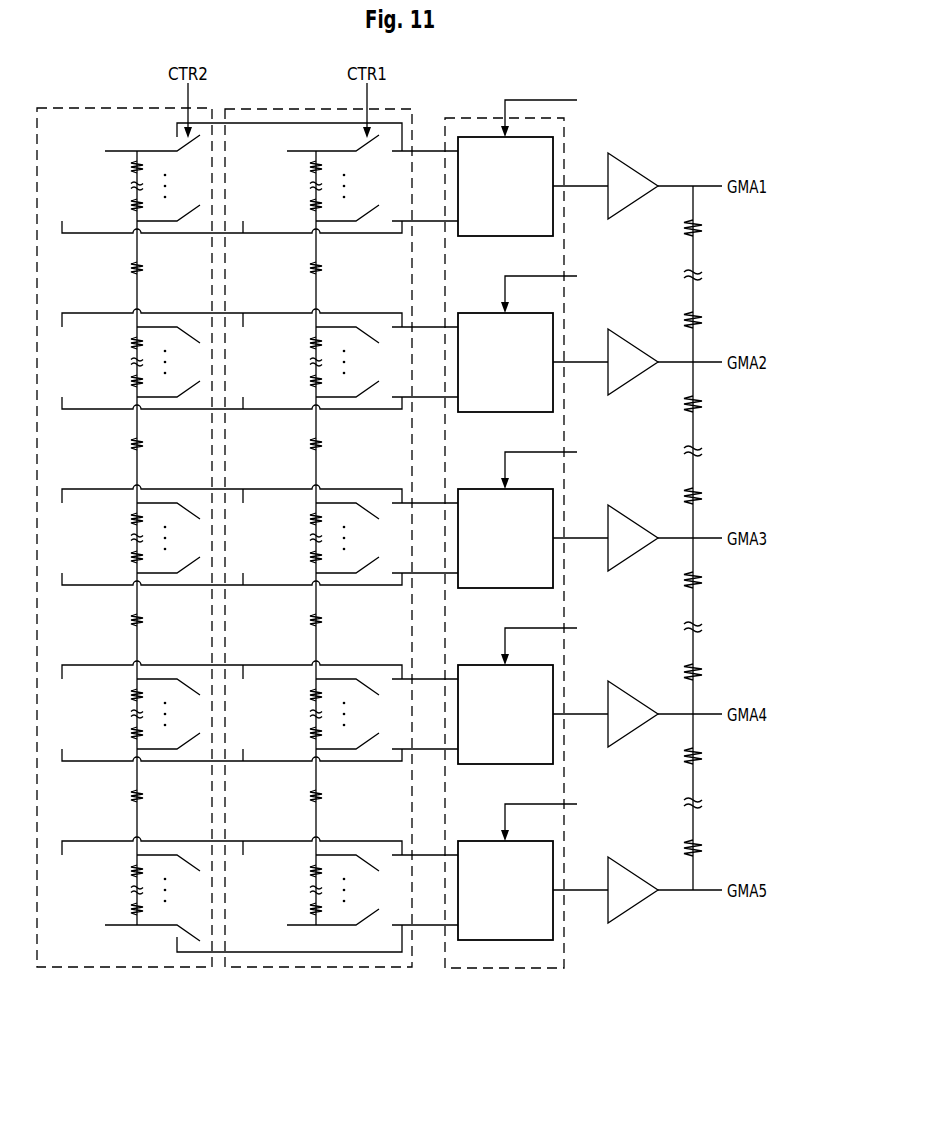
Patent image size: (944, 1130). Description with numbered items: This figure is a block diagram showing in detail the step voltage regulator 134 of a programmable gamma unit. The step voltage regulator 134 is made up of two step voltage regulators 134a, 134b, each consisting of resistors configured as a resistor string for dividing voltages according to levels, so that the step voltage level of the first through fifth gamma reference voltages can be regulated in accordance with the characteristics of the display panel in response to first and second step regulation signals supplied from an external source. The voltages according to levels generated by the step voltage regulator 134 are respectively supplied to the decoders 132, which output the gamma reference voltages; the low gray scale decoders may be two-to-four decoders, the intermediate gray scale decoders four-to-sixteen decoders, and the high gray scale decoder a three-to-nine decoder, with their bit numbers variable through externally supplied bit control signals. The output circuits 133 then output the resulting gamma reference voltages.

The decoders 132 is at (512, 968).
The output circuits 133 is at (633, 908).
The step voltage regulator 134 is at (247, 598).
The step voltage regulator 134a is at (341, 576).
The step voltage regulator 134b is at (132, 967).